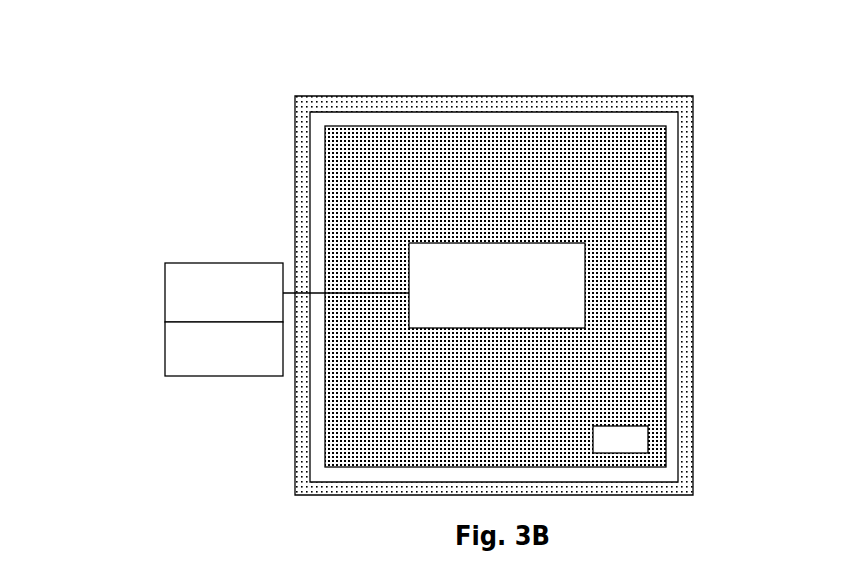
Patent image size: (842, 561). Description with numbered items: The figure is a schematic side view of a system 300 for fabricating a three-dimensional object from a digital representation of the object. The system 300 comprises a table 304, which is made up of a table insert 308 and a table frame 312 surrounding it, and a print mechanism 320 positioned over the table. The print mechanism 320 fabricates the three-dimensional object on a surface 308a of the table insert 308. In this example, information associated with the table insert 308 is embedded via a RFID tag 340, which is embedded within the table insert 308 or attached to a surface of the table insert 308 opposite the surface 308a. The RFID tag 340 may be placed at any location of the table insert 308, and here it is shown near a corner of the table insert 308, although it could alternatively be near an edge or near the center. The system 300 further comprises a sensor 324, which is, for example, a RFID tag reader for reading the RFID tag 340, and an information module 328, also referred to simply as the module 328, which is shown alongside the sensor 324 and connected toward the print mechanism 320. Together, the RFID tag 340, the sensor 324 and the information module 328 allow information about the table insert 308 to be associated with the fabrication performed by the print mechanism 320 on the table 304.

The system 300 is at (693, 50).
The table 304 is at (100, 497).
The table insert 308 is at (327, 393).
The surface 308a is at (382, 462).
The table frame 312 is at (293, 495).
The print mechanism 320 is at (497, 285).
The sensor 324 is at (224, 349).
The information module 328 is at (287, 292).
The RFID tag 340 is at (620, 439).